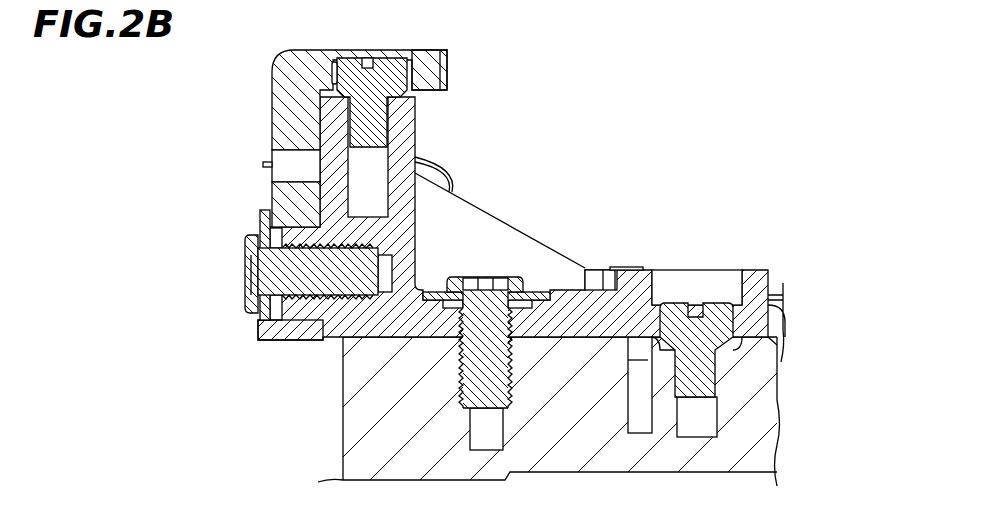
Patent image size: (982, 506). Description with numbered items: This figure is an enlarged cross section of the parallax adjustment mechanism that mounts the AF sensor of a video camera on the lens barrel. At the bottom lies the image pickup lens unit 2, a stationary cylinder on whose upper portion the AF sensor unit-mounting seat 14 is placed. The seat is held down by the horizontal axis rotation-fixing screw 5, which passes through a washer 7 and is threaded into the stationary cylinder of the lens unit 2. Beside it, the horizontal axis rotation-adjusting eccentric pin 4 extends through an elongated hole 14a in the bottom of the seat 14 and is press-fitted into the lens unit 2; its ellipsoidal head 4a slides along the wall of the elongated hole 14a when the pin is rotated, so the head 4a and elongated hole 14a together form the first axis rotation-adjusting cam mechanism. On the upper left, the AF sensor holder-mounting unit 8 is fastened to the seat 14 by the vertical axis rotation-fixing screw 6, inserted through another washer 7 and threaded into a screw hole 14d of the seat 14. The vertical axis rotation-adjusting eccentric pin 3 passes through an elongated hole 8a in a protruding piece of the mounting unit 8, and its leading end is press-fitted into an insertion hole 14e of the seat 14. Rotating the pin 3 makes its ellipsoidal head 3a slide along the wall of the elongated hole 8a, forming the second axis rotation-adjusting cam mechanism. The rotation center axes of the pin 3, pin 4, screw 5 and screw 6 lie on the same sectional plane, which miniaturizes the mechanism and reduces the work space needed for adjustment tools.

The image pickup lens unit 2 is at (322, 421).
The vertical axis rotation-adjusting eccentric pin 3 is at (372, 68).
The head 3a is at (333, 72).
The horizontal axis rotation-adjusting eccentric pin 4 is at (711, 302).
The head 4a is at (771, 322).
The horizontal axis rotation-fixing screw 5 is at (515, 274).
The vertical axis rotation-fixing screw 6 is at (257, 272).
The washer 7 is at (262, 212).
The AF sensor holder-mounting unit 8 is at (280, 112).
The elongated hole 8a is at (413, 112).
The AF sensor unit-mounting seat 14 is at (634, 278).
The elongated hole 14a is at (697, 290).
The screw hole 14d is at (300, 332).
The insertion hole 14e is at (372, 193).